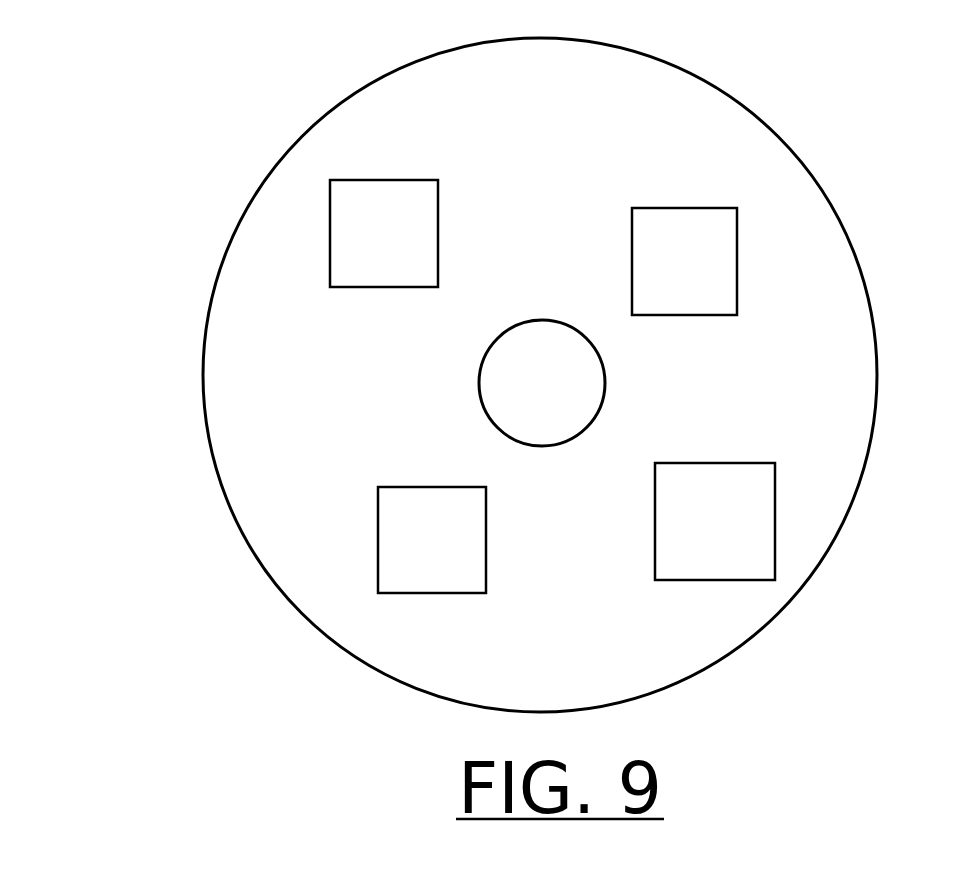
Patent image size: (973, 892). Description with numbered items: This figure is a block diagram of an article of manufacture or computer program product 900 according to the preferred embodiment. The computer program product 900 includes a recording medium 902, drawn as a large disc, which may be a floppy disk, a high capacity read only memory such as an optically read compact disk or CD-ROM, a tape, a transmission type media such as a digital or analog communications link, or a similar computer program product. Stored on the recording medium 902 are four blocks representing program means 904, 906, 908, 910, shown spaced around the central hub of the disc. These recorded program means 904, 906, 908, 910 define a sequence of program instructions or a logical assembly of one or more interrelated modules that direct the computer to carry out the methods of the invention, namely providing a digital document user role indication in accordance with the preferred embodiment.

The computer program product 900 is at (824, 155).
The recording medium 902 is at (280, 215).
The program means 904 is at (684, 261).
The program means 906 is at (715, 521).
The program means 908 is at (432, 540).
The program means 910 is at (384, 233).